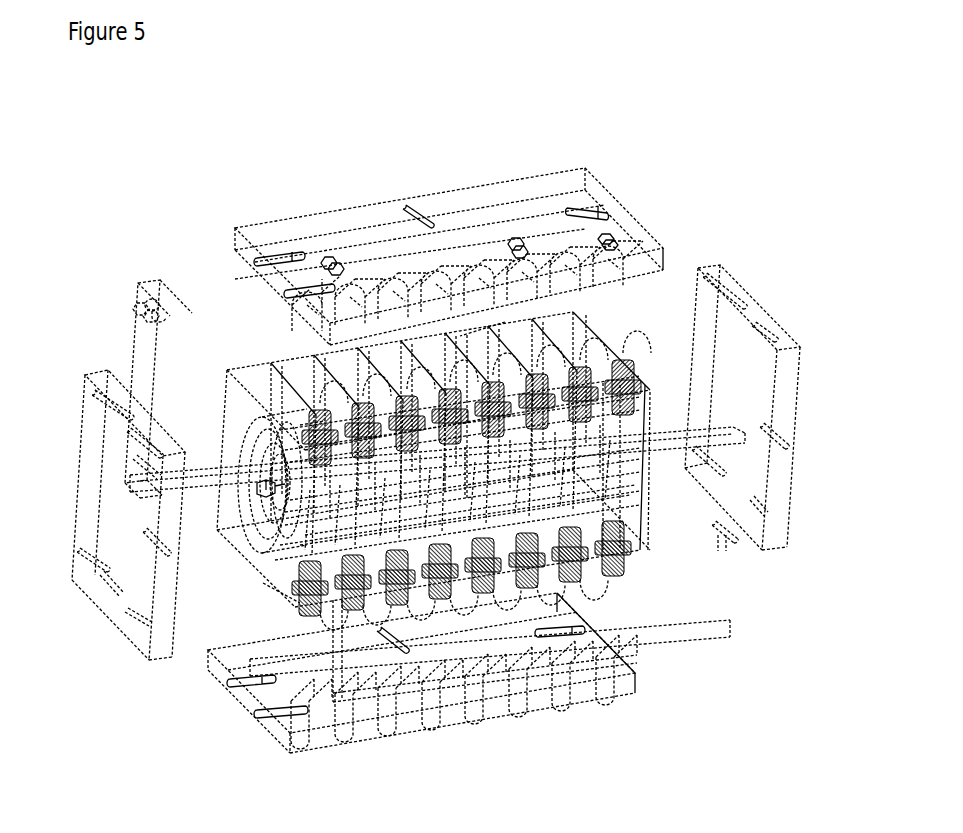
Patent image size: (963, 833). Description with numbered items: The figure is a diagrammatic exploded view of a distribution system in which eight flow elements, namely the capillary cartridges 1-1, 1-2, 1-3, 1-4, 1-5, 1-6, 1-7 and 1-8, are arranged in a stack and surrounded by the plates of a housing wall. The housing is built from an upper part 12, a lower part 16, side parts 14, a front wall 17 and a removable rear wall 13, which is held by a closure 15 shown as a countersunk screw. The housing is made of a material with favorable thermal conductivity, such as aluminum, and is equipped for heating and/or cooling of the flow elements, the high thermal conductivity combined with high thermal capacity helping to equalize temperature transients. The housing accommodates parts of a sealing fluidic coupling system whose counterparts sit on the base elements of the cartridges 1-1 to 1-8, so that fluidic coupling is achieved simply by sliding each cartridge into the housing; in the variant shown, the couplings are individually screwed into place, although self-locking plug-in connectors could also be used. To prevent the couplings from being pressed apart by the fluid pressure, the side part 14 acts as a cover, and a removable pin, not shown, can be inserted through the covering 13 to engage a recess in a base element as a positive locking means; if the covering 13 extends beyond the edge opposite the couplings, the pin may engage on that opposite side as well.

The capillary cartridge 1-1 is at (248, 368).
The capillary cartridge 1-2 is at (303, 358).
The capillary cartridge 1-3 is at (350, 355).
The capillary cartridge 1-4 is at (383, 342).
The capillary cartridge 1-5 is at (420, 337).
The capillary cartridge 1-6 is at (467, 335).
The capillary cartridge 1-7 is at (505, 322).
The capillary cartridge 1-8 is at (470, 343).
The upper part 12 is at (612, 220).
The removable rear wall 13 is at (702, 610).
The side part 14 is at (80, 447).
The closure of the rear wall 15 is at (695, 445).
The lower part 16 is at (240, 708).
The front wall 17 is at (133, 337).